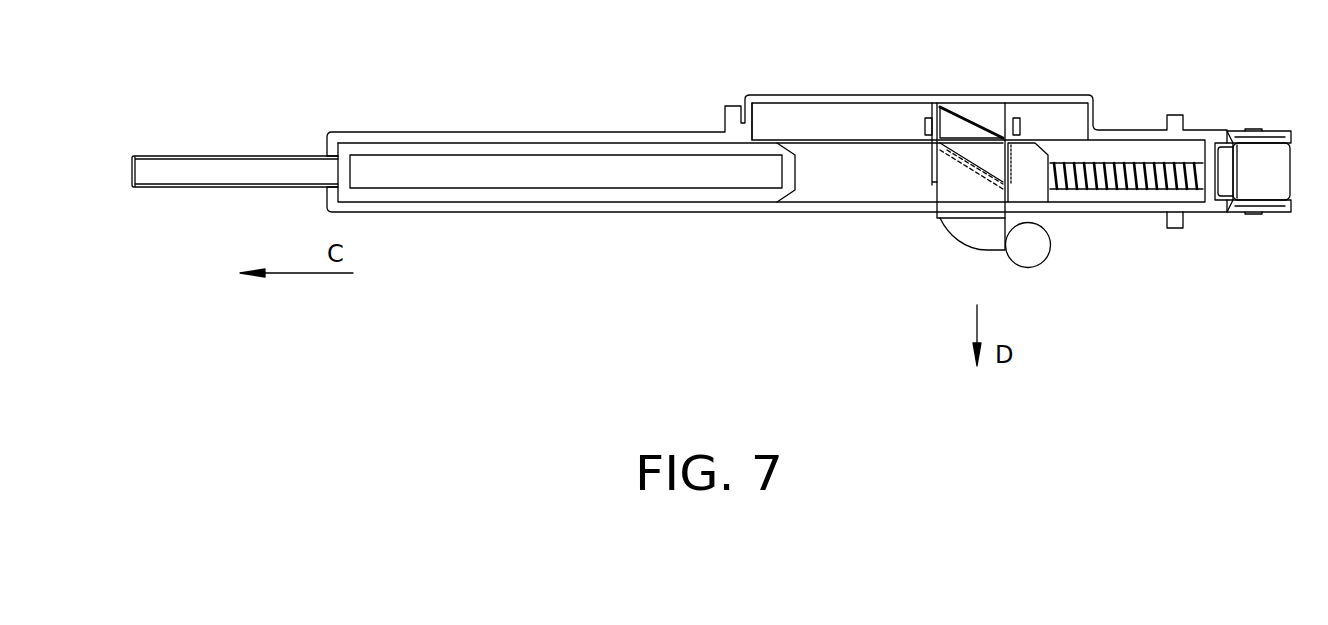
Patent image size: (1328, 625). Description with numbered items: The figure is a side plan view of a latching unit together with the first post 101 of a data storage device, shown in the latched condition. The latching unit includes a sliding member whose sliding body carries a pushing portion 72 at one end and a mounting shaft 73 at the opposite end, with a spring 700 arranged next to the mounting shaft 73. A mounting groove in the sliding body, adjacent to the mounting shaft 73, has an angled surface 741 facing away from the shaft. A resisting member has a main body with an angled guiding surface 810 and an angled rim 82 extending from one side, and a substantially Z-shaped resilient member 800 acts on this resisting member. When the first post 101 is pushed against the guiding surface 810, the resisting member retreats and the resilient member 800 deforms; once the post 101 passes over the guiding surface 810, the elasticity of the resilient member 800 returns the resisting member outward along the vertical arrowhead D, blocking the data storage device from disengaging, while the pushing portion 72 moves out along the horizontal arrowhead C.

The pushing portion 72 is at (212, 170).
The mounting shaft 73 is at (1127, 172).
The angled rim 82 is at (977, 152).
The first post 101 is at (1033, 252).
The spring 700 is at (1177, 163).
The angled surface 741 is at (967, 167).
The resilient member 800 is at (965, 110).
The guiding surface 810 is at (973, 245).